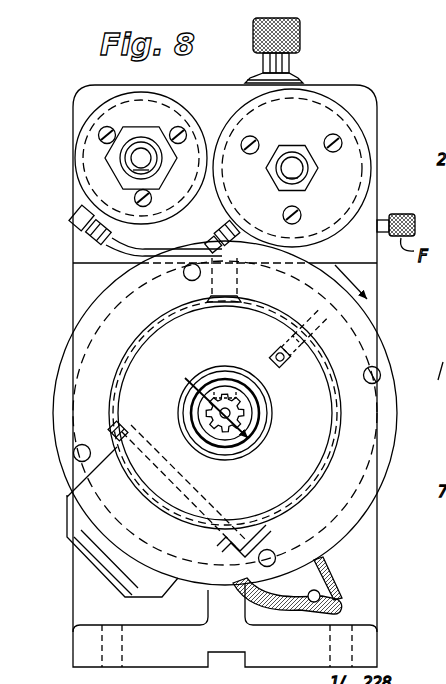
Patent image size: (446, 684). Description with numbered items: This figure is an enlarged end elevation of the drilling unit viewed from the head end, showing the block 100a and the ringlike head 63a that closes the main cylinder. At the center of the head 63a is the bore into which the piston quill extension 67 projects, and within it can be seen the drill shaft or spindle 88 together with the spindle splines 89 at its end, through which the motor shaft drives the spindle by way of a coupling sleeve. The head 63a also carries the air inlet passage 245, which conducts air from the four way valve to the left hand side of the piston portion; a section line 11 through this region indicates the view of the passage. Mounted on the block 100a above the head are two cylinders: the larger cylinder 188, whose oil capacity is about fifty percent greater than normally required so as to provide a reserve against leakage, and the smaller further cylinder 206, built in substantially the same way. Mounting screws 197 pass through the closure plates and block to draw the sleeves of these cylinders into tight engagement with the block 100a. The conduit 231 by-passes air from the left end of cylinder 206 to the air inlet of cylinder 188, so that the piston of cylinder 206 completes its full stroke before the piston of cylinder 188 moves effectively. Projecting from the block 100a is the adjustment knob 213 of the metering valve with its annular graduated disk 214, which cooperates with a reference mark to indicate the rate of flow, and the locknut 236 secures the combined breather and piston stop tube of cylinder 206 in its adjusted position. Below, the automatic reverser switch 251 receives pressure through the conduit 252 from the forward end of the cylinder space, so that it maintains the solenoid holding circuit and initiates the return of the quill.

The block 100a is at (360, 82).
The adjustment knob 213 is at (302, 32).
The annular graduated disk 214 is at (255, 76).
The further cylinder 206 is at (78, 137).
The locknut 236 is at (113, 167).
The cylinder 188 is at (360, 118).
The mounting screws 197 is at (112, 127).
The conduit 231 is at (156, 249).
The section line 11- 11 is at (266, 341).
The ringlike head 63a is at (397, 460).
The piston quill extension 67 is at (270, 411).
The drill shaft or spindle 88 is at (207, 413).
The spindle splines 89 is at (250, 425).
The air inlet passage 245 is at (272, 351).
The automatic reverser switch 251 is at (120, 567).
The conduit 252 is at (310, 596).